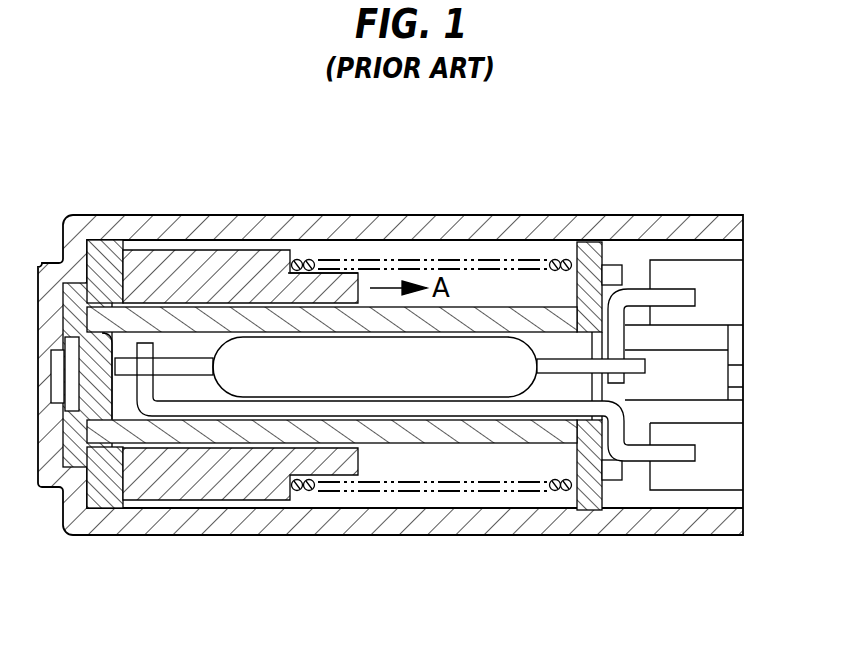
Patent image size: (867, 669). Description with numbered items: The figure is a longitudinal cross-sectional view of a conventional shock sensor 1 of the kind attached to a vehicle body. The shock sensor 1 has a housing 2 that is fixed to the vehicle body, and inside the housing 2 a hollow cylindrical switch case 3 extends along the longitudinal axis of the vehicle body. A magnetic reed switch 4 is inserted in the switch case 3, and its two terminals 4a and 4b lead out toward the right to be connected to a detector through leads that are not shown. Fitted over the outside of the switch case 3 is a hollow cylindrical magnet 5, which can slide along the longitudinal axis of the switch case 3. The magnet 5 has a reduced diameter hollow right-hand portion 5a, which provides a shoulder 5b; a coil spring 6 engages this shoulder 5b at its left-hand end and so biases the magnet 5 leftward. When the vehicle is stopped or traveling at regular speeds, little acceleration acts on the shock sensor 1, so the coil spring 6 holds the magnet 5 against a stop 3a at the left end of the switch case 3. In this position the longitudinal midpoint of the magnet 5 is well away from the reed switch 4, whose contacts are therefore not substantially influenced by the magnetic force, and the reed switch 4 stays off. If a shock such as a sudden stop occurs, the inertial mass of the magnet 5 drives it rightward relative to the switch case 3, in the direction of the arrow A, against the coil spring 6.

The shock sensor 1 is at (681, 179).
The housing 2 is at (508, 215).
The switch case 3 is at (420, 432).
The stop 3a is at (103, 500).
The magnetic reed switch 4 is at (288, 382).
The terminal 4a is at (694, 297).
The terminal 4b is at (694, 452).
The magnet 5 is at (197, 490).
The reduced diameter hollow right-hand portion 5a is at (352, 270).
The shoulder 5b is at (293, 258).
The coil spring 6 is at (402, 258).